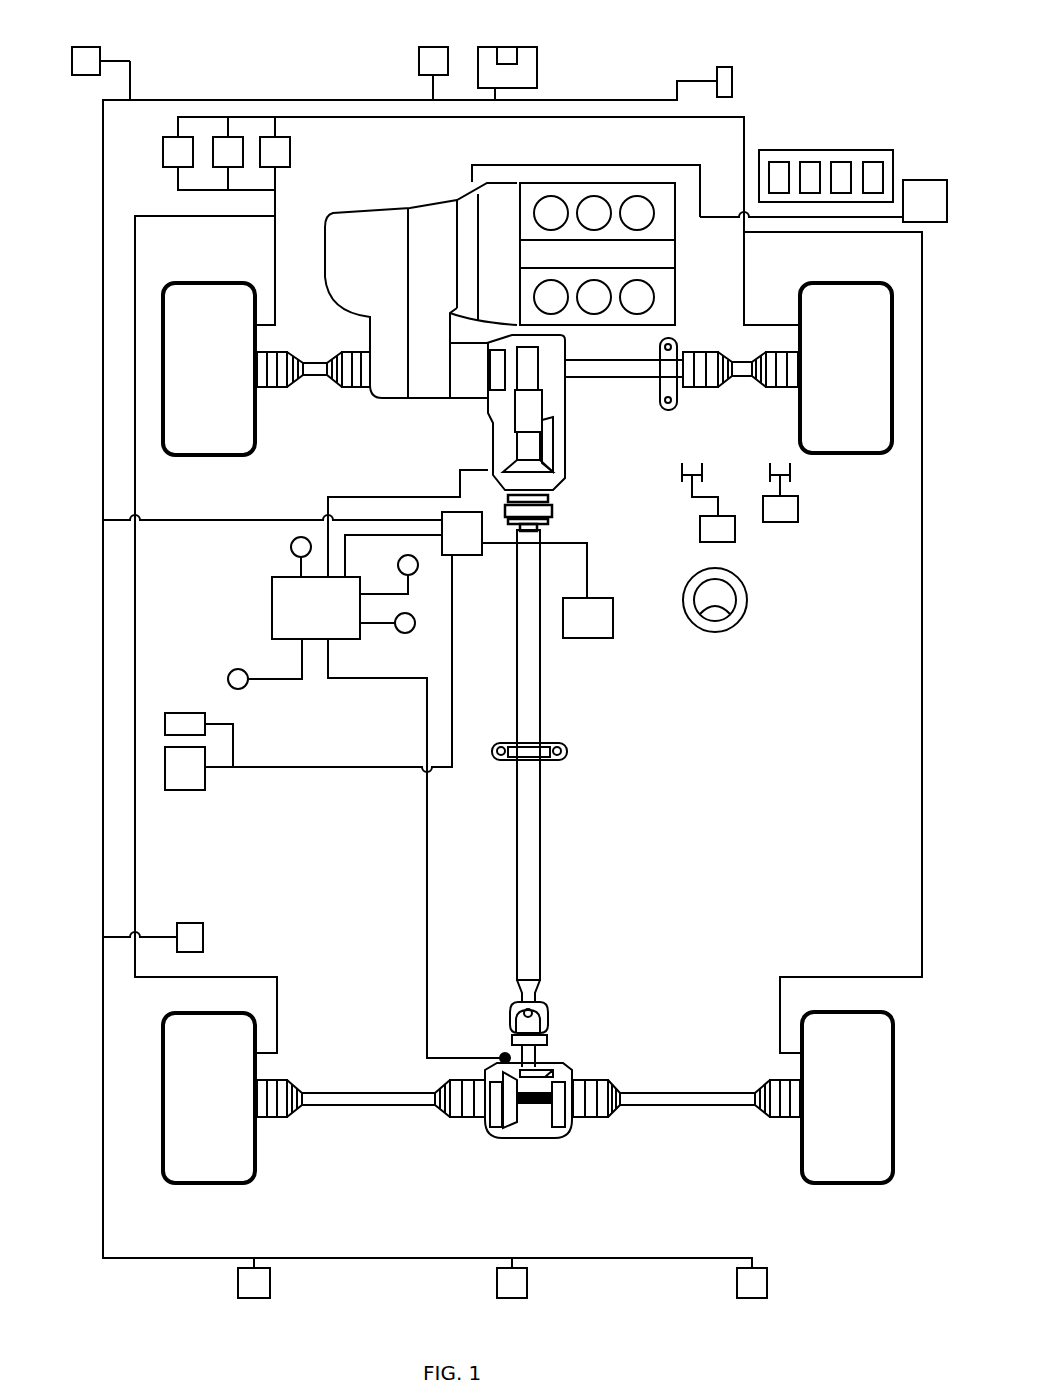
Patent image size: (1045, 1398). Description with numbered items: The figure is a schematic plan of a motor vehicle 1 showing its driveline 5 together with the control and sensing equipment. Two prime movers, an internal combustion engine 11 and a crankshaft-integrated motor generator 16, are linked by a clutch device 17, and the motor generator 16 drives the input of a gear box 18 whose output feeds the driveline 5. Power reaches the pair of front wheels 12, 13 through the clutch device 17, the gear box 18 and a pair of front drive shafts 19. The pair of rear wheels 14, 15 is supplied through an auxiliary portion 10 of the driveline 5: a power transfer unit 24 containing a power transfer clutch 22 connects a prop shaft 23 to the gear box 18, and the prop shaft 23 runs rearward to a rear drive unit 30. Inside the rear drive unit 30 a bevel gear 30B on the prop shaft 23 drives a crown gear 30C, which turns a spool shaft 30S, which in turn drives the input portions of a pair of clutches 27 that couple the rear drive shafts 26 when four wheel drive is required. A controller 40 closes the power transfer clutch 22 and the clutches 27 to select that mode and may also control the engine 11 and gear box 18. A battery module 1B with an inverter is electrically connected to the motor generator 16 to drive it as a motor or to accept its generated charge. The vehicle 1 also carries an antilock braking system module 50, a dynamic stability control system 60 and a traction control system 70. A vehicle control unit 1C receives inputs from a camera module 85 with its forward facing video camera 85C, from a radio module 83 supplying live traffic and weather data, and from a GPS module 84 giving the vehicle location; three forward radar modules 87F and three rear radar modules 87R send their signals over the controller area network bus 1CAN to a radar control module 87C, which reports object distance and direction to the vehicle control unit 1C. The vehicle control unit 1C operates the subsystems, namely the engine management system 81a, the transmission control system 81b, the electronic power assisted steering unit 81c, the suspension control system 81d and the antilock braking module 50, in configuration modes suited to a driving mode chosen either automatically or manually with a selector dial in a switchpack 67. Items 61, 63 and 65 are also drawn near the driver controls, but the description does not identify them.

The motor vehicle 1 is at (797, 79).
The battery module 1B is at (925, 201).
The vehicle control unit 1C is at (467, 553).
The vehicle controller area network bus 1CAN is at (102, 345).
The driveline 5 is at (340, 810).
The auxiliary portion 10 is at (549, 767).
The internal combustion engine 11 is at (665, 280).
The front wheel 12 is at (208, 308).
The front wheel 13 is at (848, 305).
The rear wheel 14 is at (207, 1160).
The rear wheel 15 is at (848, 1155).
The crankshaft-integrated motor generator 16 is at (468, 200).
The clutch device 17 is at (513, 266).
The gear box 18 is at (433, 227).
The front drive shafts 19 is at (312, 368).
The power transfer clutch 22 is at (498, 370).
The prop shaft 23 is at (528, 687).
The power transfer unit 24 is at (563, 420).
The rear drive shafts 26 is at (383, 1098).
The clutches 27 is at (492, 1113).
The rear drive unit 30 is at (533, 1133).
The bevel gear 30B is at (553, 1077).
The crown gear 30C is at (510, 1117).
The spool shaft 30S is at (530, 1103).
The controller 40 is at (272, 598).
The antilock braking system module 50 is at (222, 140).
The dynamic stability control system 60 is at (281, 142).
The accelerator pedal sensor 61 is at (737, 532).
The brake pedal sensor 63 is at (800, 507).
The steering wheel sensor 65 is at (735, 615).
The switchpack 67 is at (602, 630).
The traction control system 70 is at (163, 150).
The engine management system 81a is at (780, 162).
The transmission control system 81b is at (812, 162).
The electronic power assisted steering unit 81c is at (845, 162).
The suspension control system 81d is at (875, 162).
The radio module 83 is at (183, 713).
The global positioning system module 84 is at (182, 790).
The camera module 85 is at (540, 67).
The forward facing video camera 85C is at (507, 47).
The radar control module 87C is at (192, 923).
The forward radar transmit/receive modules 87F is at (91, 47).
The rear radar transmit/receive modules 87R is at (240, 1283).